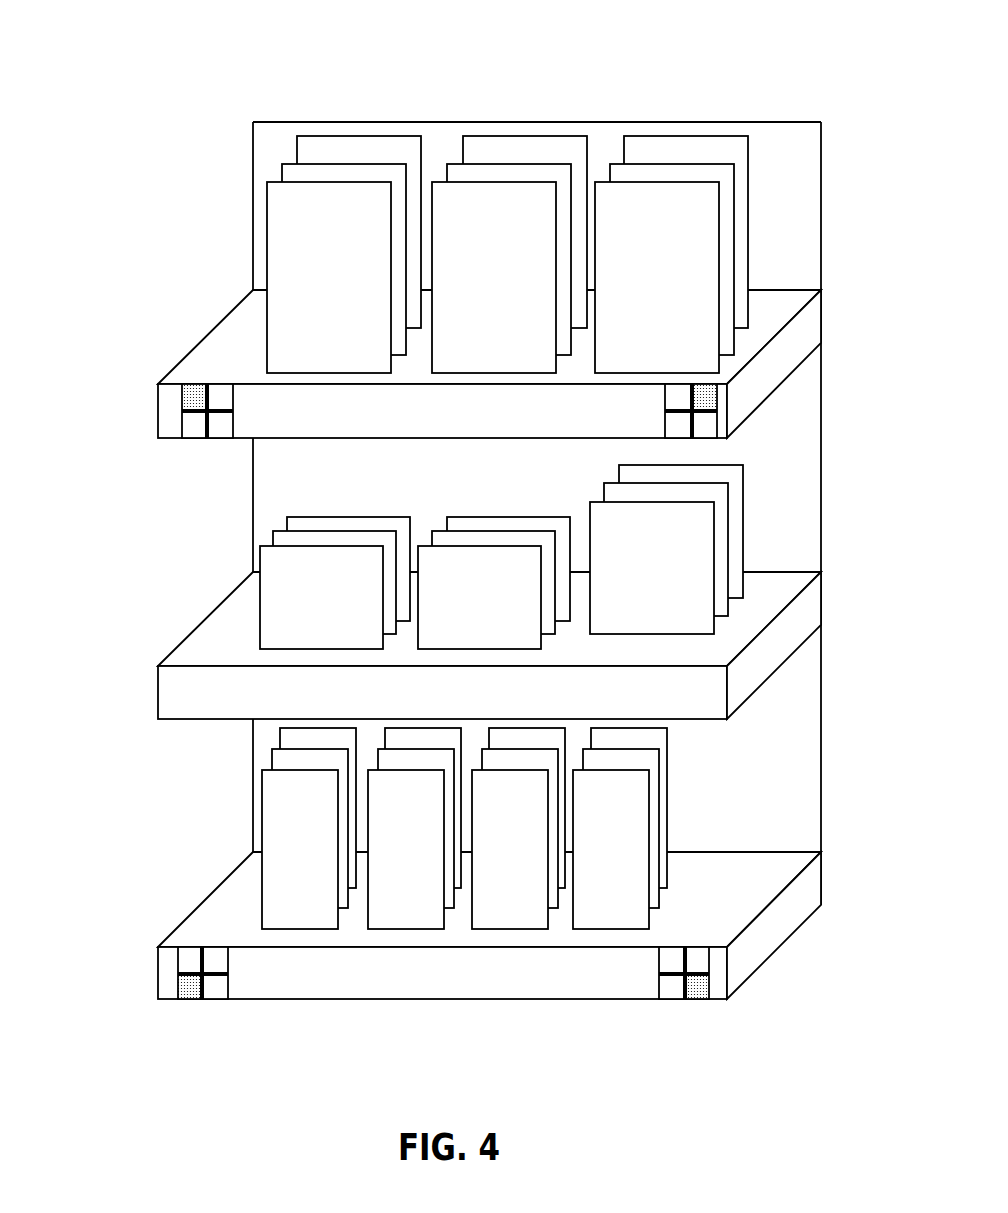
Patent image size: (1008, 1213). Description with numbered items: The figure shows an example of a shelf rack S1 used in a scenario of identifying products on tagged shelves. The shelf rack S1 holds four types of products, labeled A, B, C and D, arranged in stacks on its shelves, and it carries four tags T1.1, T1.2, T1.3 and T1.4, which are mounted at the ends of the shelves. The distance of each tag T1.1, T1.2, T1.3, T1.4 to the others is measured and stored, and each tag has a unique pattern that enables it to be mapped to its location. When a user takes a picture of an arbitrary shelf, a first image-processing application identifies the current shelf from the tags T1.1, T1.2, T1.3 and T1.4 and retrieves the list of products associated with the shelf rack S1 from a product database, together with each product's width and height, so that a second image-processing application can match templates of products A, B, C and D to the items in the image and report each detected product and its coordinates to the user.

The shelf rack S1 is at (427, 509).
The tag T1.1 is at (168, 411).
The tag T1.2 is at (738, 411).
The tag T1.3 is at (167, 974).
The tag T1.4 is at (738, 974).